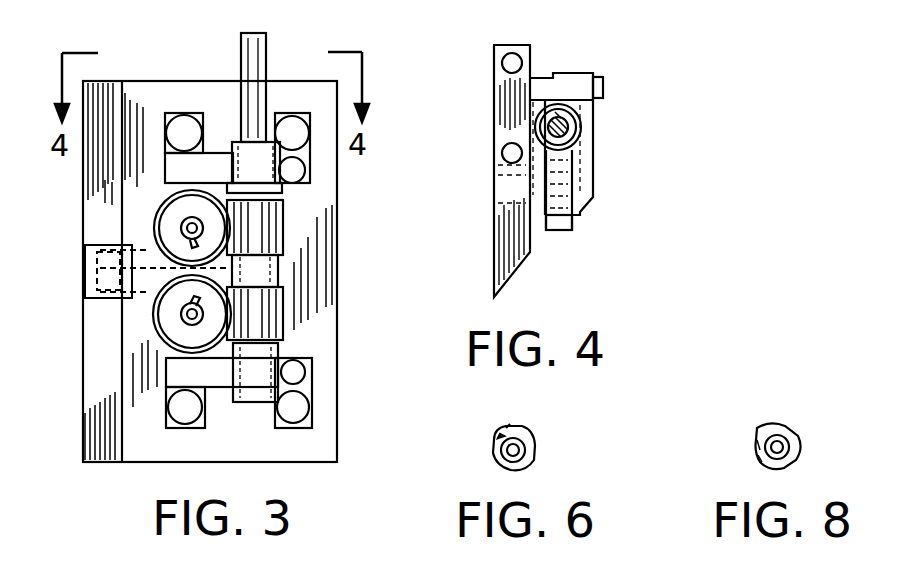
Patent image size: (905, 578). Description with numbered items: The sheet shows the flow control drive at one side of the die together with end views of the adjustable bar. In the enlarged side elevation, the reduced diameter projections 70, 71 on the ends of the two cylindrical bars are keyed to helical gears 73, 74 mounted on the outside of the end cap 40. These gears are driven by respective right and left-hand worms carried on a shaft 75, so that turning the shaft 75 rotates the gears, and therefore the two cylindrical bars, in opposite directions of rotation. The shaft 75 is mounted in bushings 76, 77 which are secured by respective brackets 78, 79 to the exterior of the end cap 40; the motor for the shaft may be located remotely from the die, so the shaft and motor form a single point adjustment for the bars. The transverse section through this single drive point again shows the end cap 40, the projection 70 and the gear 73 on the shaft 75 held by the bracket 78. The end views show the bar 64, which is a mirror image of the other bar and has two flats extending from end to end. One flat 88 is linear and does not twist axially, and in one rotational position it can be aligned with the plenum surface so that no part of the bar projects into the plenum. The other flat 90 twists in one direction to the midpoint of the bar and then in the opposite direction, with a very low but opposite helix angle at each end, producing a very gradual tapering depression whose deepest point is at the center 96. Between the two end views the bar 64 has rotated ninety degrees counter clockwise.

In FIG. 3, the end cap 40 is at (325, 314).
In FIG. 4, the end cap 40 is at (505, 127).
In FIG. 6, the bar 64 is at (545, 437).
In FIG. 8, the bar 64 is at (806, 431).
In FIG. 3, the reduced diameter projection 70 is at (190, 226).
In FIG. 4, the reduced diameter projection 70 is at (565, 232).
In FIG. 3, the reduced diameter projection 71 is at (188, 316).
In FIG. 3, the helical gear 73 is at (283, 223).
In FIG. 4, the helical gear 73 is at (593, 108).
In FIG. 3, the helical gear 74 is at (283, 300).
In FIG. 3, the shaft 75 is at (266, 52).
In FIG. 4, the shaft 75 is at (573, 137).
In FIG. 3, the bushing 76 is at (237, 142).
In FIG. 3, the bushing 77 is at (238, 402).
In FIG. 3, the bracket 78 is at (215, 165).
In FIG. 4, the bracket 78 is at (593, 137).
In FIG. 3, the bracket 79 is at (222, 378).
In FIG. 6, the flat 88 is at (528, 455).
In FIG. 8, the flat 88 is at (790, 428).
In FIG. 6, the flat 90 is at (495, 440).
In FIG. 8, the flat 90 is at (766, 465).
In FIG. 6, the center 96 is at (514, 427).